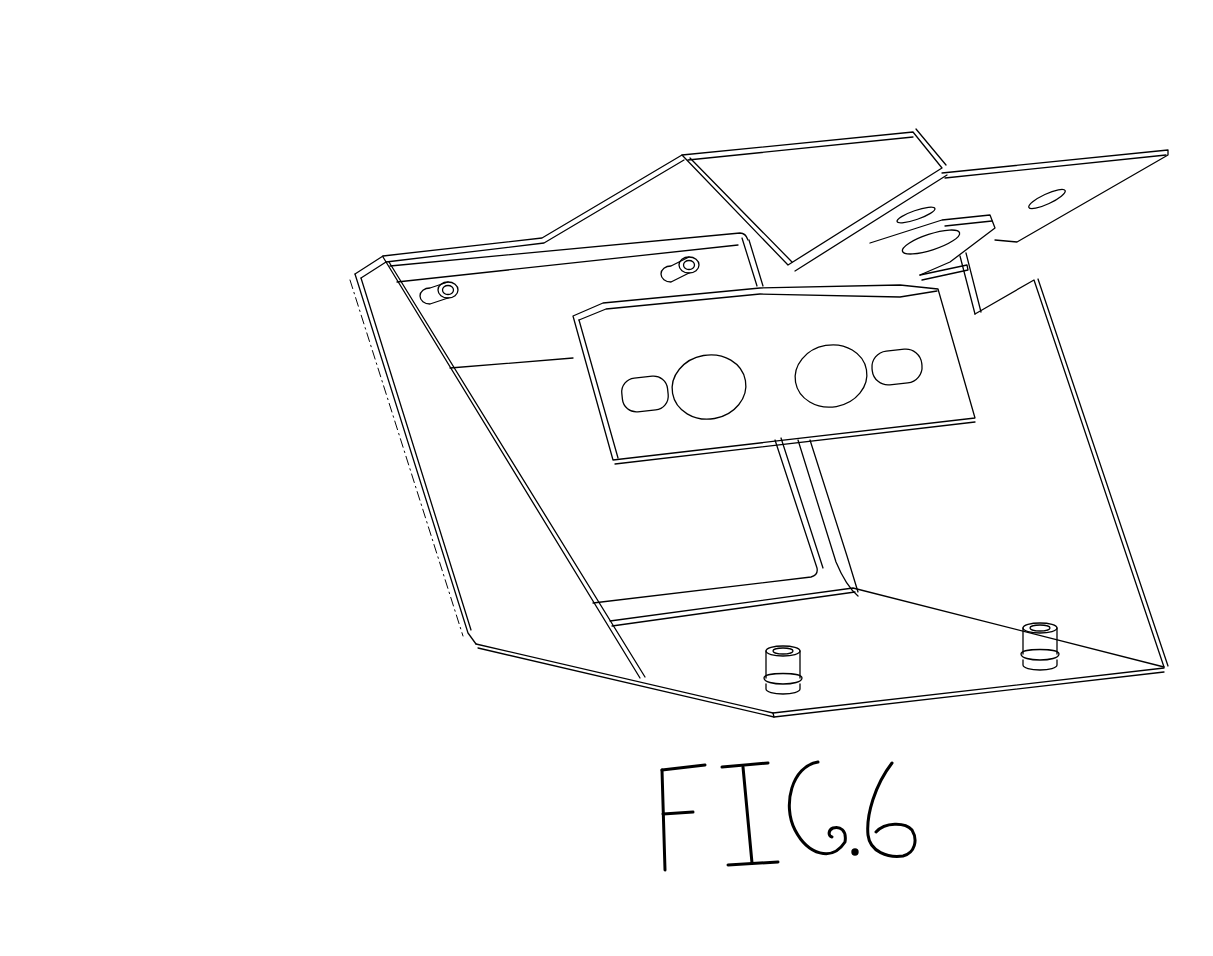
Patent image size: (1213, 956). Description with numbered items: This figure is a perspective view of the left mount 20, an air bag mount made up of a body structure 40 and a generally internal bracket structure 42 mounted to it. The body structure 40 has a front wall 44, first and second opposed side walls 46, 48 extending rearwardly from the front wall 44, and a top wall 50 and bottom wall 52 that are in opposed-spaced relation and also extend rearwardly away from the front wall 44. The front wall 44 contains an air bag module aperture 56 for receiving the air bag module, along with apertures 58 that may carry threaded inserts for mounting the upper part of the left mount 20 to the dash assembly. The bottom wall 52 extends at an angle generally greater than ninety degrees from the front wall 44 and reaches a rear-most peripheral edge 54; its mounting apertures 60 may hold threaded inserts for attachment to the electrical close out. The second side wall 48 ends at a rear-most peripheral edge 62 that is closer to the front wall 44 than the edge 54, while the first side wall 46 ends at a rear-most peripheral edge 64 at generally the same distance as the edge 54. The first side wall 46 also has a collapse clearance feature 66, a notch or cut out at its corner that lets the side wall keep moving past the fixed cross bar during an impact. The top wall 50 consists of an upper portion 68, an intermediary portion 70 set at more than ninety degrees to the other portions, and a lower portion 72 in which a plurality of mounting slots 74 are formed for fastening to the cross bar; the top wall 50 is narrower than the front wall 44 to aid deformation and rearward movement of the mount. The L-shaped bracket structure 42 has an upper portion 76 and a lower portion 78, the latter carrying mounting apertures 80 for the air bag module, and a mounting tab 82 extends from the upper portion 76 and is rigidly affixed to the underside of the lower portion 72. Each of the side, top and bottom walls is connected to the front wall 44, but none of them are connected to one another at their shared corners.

The left mount 20 is at (243, 228).
The body structure 40 is at (366, 461).
The bracket structure 42 is at (1005, 356).
The front wall 44 is at (484, 290).
The first side wall 46 is at (1068, 418).
The second side wall 48 is at (456, 540).
The top wall 50 is at (822, 135).
The bottom wall 52 is at (1000, 669).
The rear-most peripheral edge 54 is at (905, 689).
The air bag module aperture 56 is at (780, 511).
The apertures 58 is at (436, 309).
The lower grommets 60 is at (804, 688).
The rear-most peripheral edge 62 is at (568, 530).
The rear-most peripheral edge 64 is at (1125, 525).
The collapse clearance feature 66 is at (1042, 261).
The upper portion 68 is at (632, 178).
The intermediary portion 70 is at (905, 149).
The lower portion 72 is at (1113, 177).
The mounting apertures or slots 74 is at (936, 199).
The upper portion 76 is at (573, 322).
The lower portion 78 is at (612, 435).
The mounting apertures 80 is at (640, 377).
The mounting tab 82 is at (913, 272).